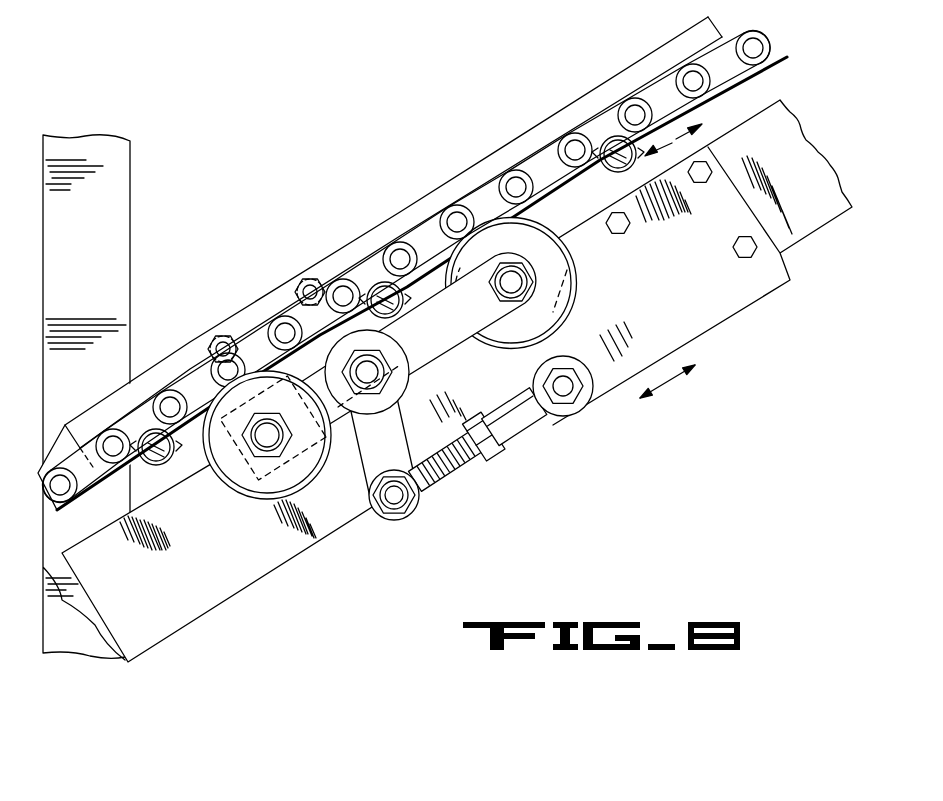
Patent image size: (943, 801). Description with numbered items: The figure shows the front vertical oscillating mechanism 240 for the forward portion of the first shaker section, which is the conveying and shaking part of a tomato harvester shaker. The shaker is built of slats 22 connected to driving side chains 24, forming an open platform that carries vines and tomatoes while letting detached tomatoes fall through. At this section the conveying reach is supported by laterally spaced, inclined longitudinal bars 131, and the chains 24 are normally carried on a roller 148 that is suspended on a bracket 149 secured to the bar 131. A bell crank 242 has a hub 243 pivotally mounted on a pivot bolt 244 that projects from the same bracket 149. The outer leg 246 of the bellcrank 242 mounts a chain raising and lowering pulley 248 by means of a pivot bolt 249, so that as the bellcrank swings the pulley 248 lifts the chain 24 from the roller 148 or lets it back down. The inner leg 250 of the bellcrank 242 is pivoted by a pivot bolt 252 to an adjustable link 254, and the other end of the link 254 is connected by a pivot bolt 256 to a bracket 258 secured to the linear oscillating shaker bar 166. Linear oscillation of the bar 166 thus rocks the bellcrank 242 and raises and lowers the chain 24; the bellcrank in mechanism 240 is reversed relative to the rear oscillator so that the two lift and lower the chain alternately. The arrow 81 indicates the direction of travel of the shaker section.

The driving side chains 24 is at (758, 58).
The slats 22 is at (168, 464).
The oscillating mechanism 240 is at (320, 230).
The bracket 149 is at (260, 308).
The longitudinal bars 131 is at (153, 377).
The direction of chain travel 81 is at (470, 90).
The pivot bolt 249 is at (514, 282).
The chain raising and lowering pulley 248 is at (552, 267).
The outer leg 246 is at (490, 310).
The pivot bolt 244 is at (380, 318).
The hub 243 is at (410, 380).
The bracket 258 is at (710, 300).
The inner leg 250 is at (400, 451).
The pivot bolt 256 is at (570, 400).
The adjustable link 254 is at (522, 428).
The pivot bolt 252 is at (396, 498).
The bell crank 242 is at (360, 480).
The rollers 148 is at (245, 482).
The shaker bar 166 is at (205, 596).